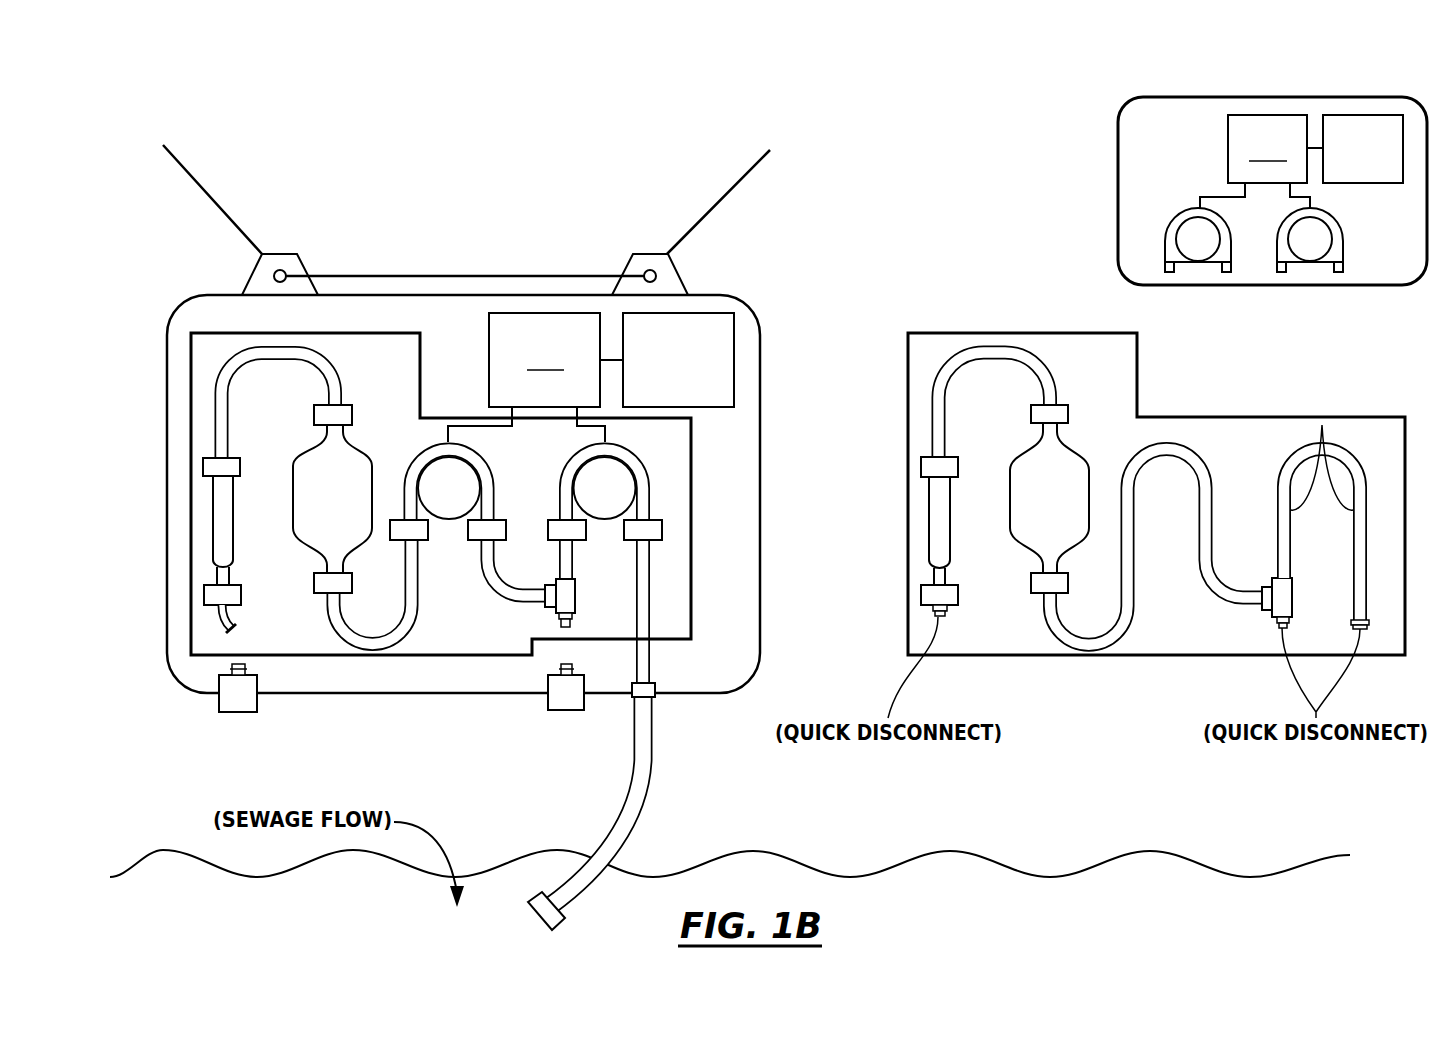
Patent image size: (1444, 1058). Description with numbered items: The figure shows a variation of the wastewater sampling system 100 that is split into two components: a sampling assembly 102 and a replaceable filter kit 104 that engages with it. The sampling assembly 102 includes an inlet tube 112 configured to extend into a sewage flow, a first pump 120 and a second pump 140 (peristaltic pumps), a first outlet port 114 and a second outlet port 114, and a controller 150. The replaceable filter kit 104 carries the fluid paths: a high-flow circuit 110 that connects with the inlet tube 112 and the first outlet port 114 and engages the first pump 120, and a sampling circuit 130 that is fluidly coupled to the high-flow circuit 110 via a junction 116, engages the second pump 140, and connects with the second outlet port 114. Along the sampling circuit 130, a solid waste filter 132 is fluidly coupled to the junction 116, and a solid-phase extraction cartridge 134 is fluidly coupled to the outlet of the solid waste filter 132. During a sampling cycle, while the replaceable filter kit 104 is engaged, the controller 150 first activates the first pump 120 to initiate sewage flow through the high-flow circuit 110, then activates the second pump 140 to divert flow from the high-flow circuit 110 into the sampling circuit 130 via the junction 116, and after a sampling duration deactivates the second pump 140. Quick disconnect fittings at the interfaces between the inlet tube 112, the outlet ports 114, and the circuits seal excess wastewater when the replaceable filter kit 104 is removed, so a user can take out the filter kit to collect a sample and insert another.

The wastewater sampling system 100 is at (219, 101).
The sampling assembly 102 is at (742, 357).
The replaceable filter kit 104 is at (205, 392).
The high-flow circuit 110 is at (1322, 425).
The inlet tube 112 is at (652, 760).
The outlet port 114 is at (238, 712).
The junction 116 is at (553, 617).
The first pump 120 is at (650, 482).
The sampling circuit 130 is at (418, 610).
The solid waste filter 132 is at (353, 448).
The solid-phase extraction cartridge 134 is at (210, 525).
The second pump 140 is at (441, 441).
The controller 150 is at (946, 261).